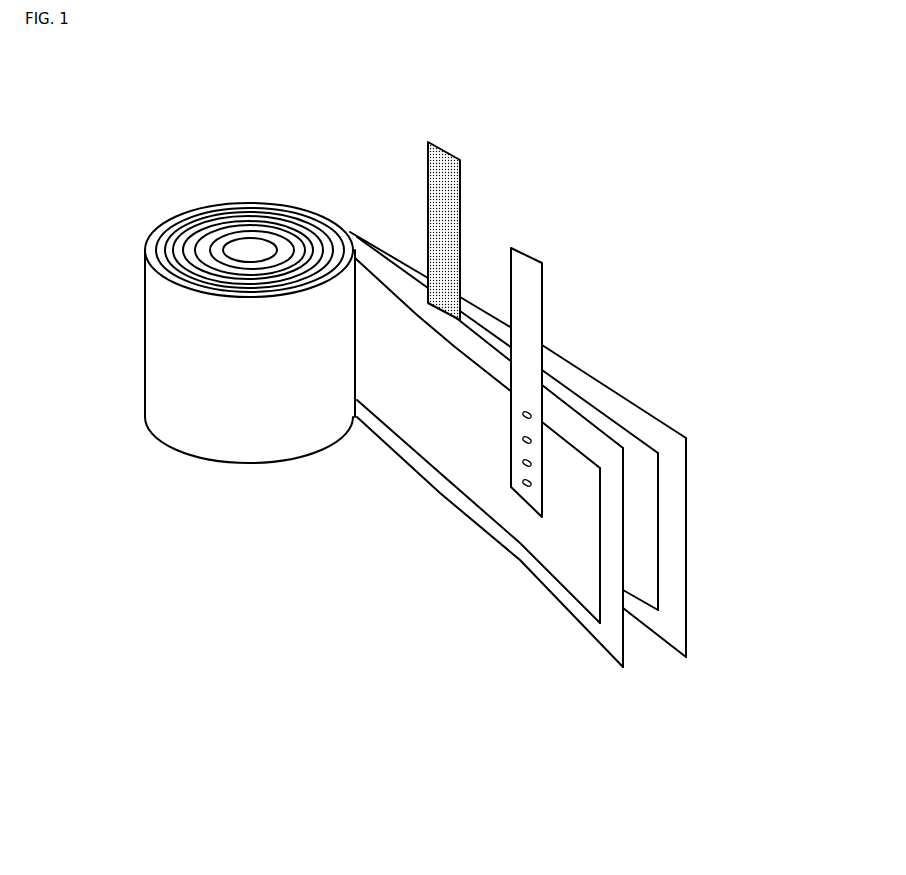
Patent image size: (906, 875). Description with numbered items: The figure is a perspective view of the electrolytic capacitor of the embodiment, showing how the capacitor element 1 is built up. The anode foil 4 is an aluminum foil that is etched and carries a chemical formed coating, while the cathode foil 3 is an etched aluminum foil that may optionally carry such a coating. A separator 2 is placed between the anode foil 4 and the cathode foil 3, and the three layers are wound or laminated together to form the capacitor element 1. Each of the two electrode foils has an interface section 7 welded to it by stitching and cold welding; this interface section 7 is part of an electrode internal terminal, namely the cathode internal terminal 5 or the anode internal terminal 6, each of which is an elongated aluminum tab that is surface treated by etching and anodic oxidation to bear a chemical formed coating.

The capacitor element 1 is at (135, 205).
The separator 2 is at (673, 497).
The cathode foil 3 is at (640, 543).
The anode foil 4 is at (440, 455).
The cathode internal terminal 5 is at (443, 212).
The anode internal terminal 6 is at (527, 290).
The interface section 7 is at (517, 497).